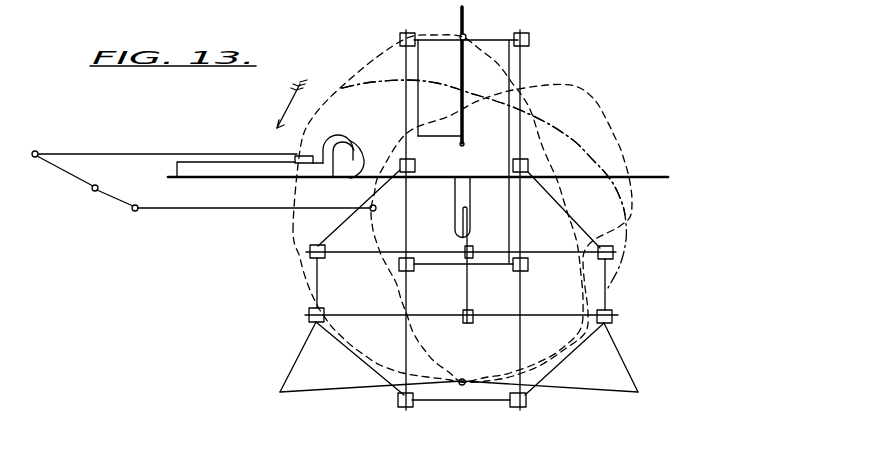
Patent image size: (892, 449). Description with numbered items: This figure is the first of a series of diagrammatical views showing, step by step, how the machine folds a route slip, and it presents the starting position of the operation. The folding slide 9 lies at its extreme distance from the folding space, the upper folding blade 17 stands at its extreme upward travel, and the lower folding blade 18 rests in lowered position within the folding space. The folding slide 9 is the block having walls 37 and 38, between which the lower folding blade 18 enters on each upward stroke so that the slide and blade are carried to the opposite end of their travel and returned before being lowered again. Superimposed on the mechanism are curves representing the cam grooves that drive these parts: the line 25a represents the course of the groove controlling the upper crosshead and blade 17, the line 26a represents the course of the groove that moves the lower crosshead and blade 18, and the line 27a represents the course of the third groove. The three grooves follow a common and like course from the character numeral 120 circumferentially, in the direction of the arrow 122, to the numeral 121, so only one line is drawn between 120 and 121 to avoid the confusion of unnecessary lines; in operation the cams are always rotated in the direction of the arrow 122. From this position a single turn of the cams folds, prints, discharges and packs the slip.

The folding slide 9 is at (246, 161).
The upper folding blade 17 is at (467, 25).
The lower folding blade 18 is at (470, 227).
The course of cam groove 25 25a is at (377, 57).
The course of cam groove 26 26a is at (580, 155).
The course of cam groove 27 27a is at (575, 86).
The wall of block 37 is at (340, 136).
The wall of block 38 is at (352, 141).
The character numeral 120 is at (342, 88).
The character numeral 121 is at (582, 333).
The arrow 122 is at (283, 107).